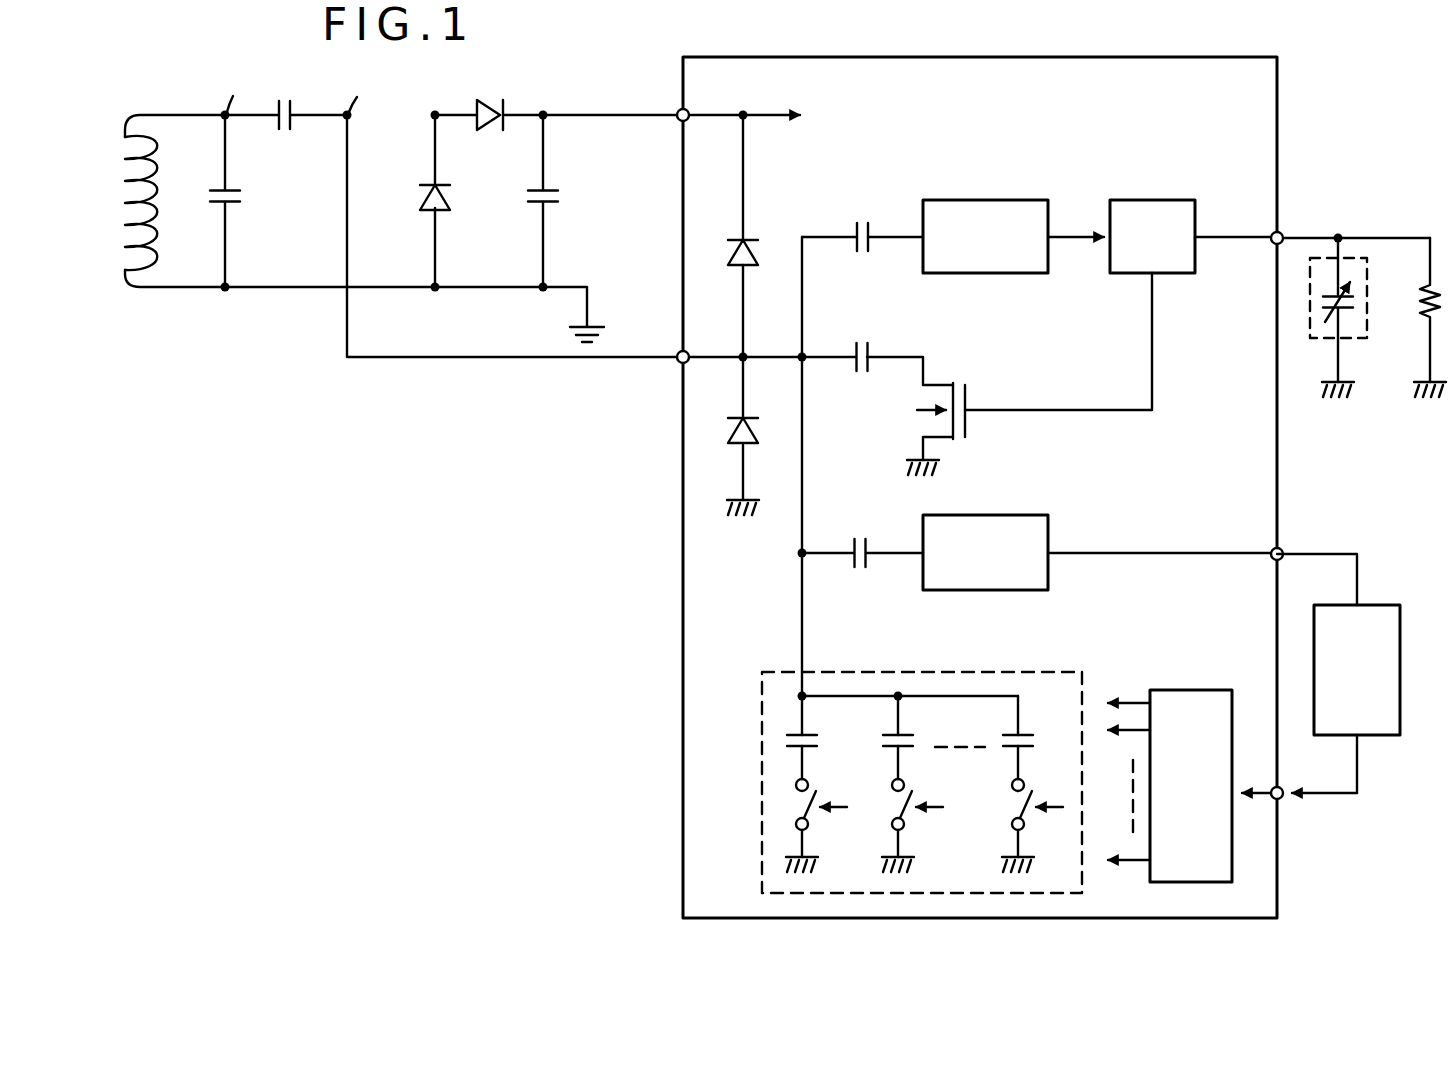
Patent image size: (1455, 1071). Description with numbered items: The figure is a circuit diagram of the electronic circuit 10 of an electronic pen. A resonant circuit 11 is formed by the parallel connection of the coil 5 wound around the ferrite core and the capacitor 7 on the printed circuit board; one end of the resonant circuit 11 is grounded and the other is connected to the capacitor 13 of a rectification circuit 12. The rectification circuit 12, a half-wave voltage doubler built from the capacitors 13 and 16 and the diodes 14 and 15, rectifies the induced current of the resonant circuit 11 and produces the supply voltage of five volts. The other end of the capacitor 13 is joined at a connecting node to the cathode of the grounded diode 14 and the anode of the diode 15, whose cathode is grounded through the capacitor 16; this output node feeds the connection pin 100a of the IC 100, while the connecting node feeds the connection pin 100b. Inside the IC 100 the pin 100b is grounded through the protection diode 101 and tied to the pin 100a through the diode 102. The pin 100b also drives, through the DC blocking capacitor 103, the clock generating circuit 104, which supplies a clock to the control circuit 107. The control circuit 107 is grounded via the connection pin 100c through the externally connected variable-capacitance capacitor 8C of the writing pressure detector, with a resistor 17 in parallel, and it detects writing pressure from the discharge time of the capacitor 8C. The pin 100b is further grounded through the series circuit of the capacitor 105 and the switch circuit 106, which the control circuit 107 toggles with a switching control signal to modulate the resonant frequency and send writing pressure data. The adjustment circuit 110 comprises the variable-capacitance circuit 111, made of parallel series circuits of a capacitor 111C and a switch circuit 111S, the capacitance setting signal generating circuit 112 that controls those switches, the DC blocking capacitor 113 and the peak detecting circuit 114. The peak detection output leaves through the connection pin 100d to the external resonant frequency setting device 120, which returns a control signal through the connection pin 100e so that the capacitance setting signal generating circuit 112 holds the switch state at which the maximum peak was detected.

The electronic circuit 10 is at (683, 38).
The resonant circuit 11 is at (178, 105).
The coil 5 is at (124, 178).
The capacitor 7 is at (242, 200).
The capacitor 13 is at (286, 104).
The rectification circuit 12 is at (503, 87).
The diode 14 is at (440, 209).
The diode 15 is at (489, 130).
The capacitor 16 is at (559, 198).
The IC 100 is at (683, 710).
The connection pin 100a is at (687, 113).
The connection pin 100b is at (677, 362).
The connection pin 100c is at (1283, 234).
The connection pin 100d is at (1273, 548).
The connection pin 100e is at (1285, 797).
The diode for protection 101 is at (748, 446).
The diode 102 is at (748, 245).
The capacitor for DC blocking 103 is at (862, 265).
The clock generating circuit 104 is at (970, 276).
The capacitor 105 is at (862, 375).
The switch circuit 106 is at (950, 446).
The control circuit 107 is at (1175, 275).
The adjustment circuit of the resonant frequency 110 is at (1130, 629).
The variable-capacitance circuit 111 is at (780, 670).
The capacitor 111C is at (785, 742).
The switch circuit 111S is at (800, 806).
The capacitance setting signal generating circuit 112 is at (1190, 688).
The capacitor for DC blocking 113 is at (860, 568).
The peak detecting circuit 114 is at (975, 592).
The resonant frequency setting device 120 is at (1380, 738).
The resistor 17 is at (1424, 300).
The variable-capacitance capacitor 8C is at (1346, 340).